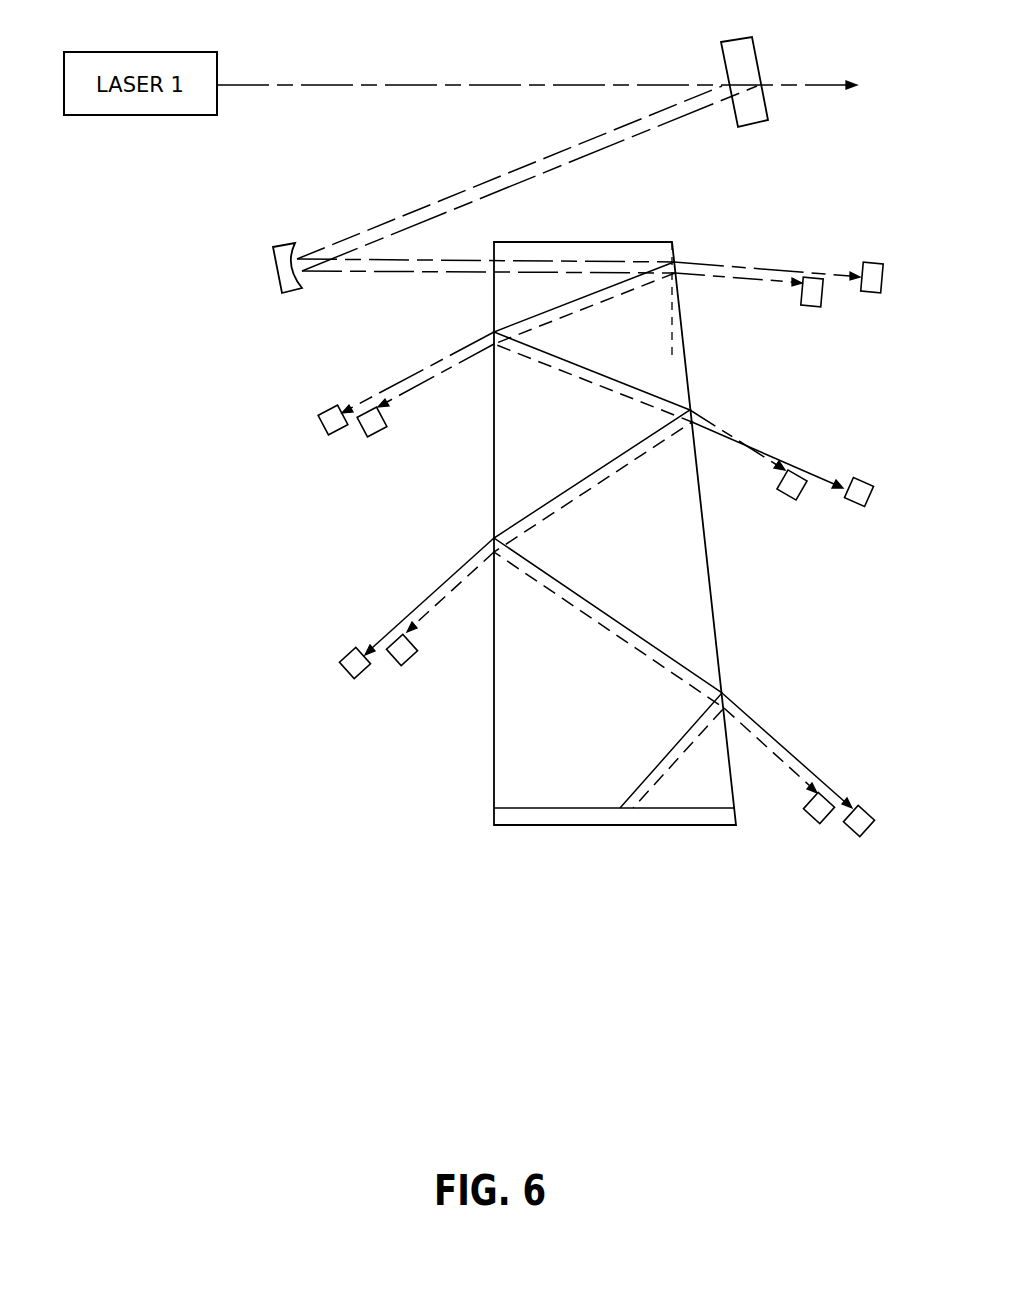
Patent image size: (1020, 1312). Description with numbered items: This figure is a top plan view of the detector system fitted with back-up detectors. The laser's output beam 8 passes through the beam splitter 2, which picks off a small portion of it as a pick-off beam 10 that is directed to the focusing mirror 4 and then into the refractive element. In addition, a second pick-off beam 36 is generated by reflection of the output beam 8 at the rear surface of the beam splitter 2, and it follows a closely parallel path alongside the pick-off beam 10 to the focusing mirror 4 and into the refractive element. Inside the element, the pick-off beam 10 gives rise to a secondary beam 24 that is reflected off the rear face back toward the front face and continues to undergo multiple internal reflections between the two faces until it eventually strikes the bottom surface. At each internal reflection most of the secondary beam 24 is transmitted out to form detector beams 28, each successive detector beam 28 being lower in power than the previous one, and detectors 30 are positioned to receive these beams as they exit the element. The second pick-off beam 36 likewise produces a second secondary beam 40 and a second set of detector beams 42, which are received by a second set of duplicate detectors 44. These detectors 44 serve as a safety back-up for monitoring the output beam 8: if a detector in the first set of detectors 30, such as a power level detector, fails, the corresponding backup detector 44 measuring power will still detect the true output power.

The beam splitter 2 is at (735, 52).
The focusing mirror 4 is at (288, 240).
The output beam 8 is at (457, 85).
The pick-off beam 10 is at (487, 182).
The second pick-off beam 36 is at (612, 147).
The secondary beam 24 is at (518, 320).
The second secondary beam 40 is at (638, 290).
The detector beams 28 is at (410, 376).
The second set of detector beams 42 is at (428, 382).
The detectors 30 is at (875, 262).
The second set of detectors 44 is at (815, 306).